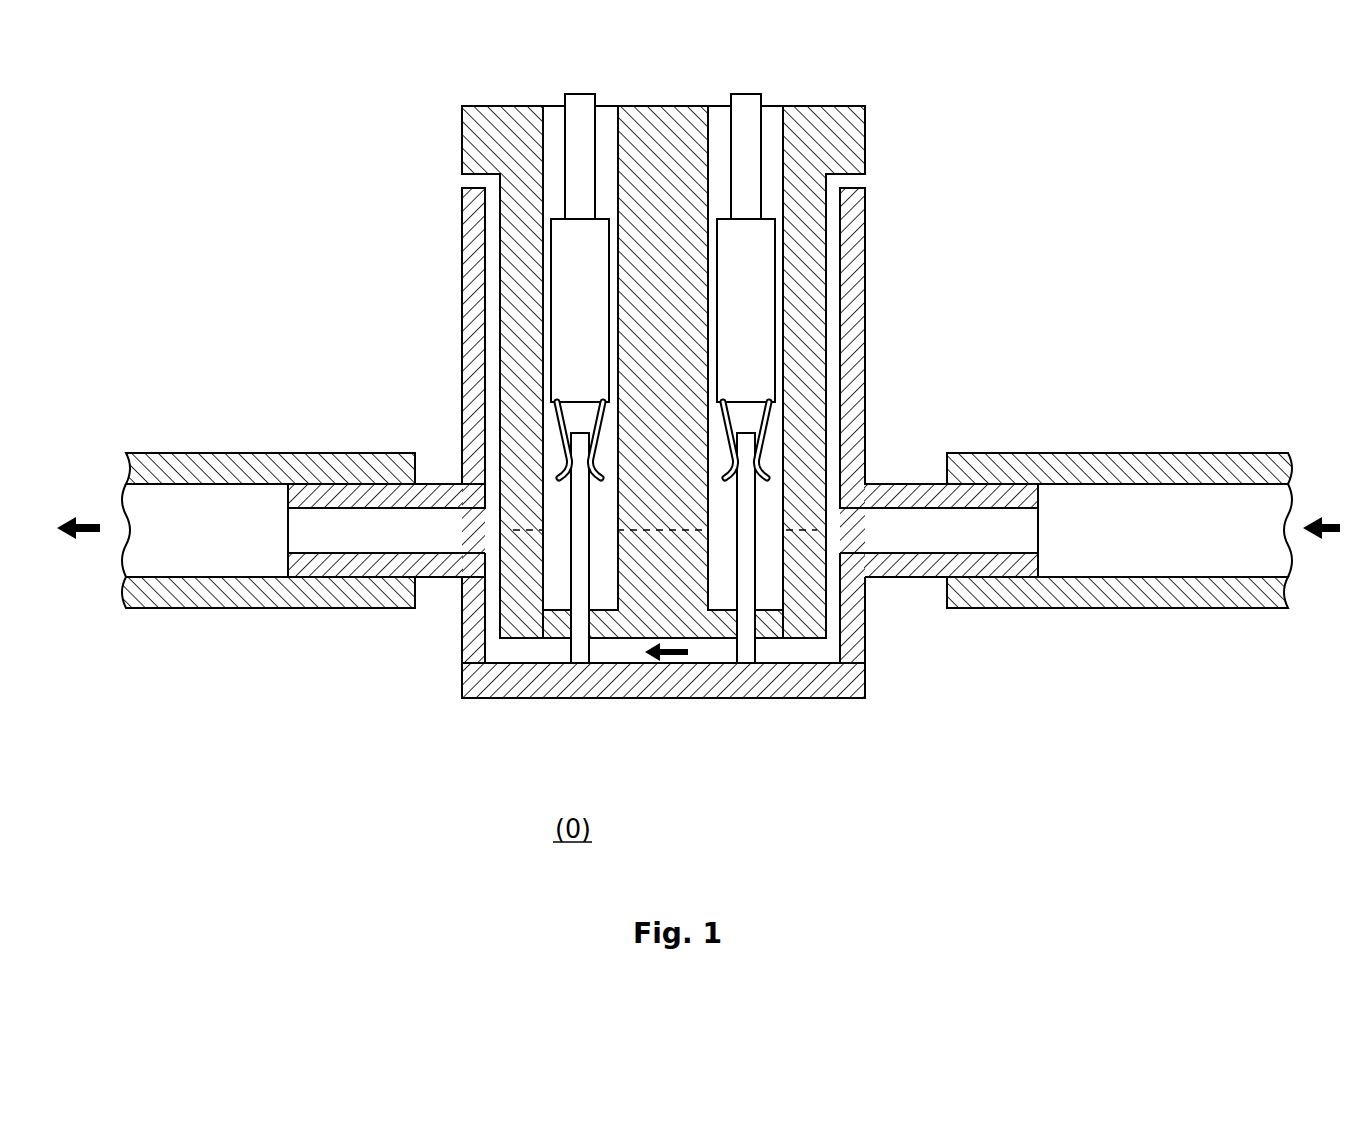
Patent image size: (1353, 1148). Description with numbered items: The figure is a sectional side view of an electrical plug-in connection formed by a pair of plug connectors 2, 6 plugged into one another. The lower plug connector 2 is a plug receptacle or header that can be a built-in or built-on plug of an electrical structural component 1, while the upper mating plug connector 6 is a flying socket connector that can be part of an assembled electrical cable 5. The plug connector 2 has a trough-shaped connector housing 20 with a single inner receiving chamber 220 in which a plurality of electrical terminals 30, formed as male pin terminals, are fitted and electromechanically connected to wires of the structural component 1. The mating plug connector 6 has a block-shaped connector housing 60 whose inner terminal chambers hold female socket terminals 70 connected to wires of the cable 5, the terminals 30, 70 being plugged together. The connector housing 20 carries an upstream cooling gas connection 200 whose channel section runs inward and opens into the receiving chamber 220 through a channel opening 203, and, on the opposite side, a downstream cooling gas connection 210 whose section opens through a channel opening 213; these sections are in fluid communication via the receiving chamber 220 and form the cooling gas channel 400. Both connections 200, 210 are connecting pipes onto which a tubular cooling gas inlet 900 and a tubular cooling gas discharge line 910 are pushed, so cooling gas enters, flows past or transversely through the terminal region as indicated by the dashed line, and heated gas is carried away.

The electrical structural component 1 is at (459, 776).
The plug connector 2 is at (668, 480).
The assembled electrical cable 5 is at (885, 76).
The mating plug connector 6 is at (657, 399).
The connector housing 20 is at (668, 696).
The electrical terminals 30 is at (580, 655).
The connector housing 60 is at (468, 145).
The electrical terminals 70 is at (763, 299).
The upstream cooling gas connection 200 is at (990, 492).
The channel opening 203 is at (840, 530).
The downstream cooling gas connection 210 is at (353, 490).
The channel opening 213 is at (487, 528).
The receiving chamber 220 is at (493, 347).
The cooling gas channel 400 is at (367, 540).
The cooling gas inlet 900 is at (1180, 597).
The cooling gas discharge line 910 is at (203, 598).